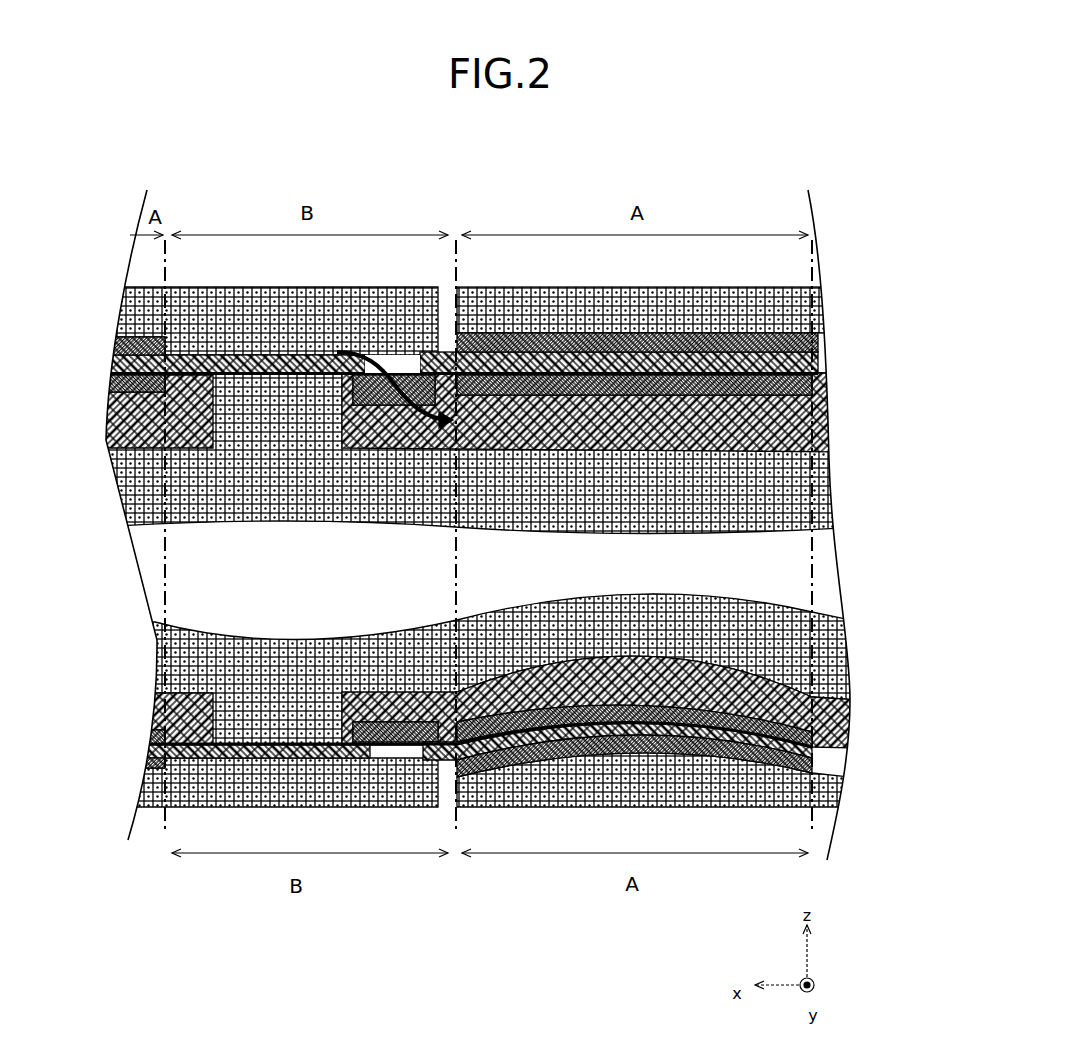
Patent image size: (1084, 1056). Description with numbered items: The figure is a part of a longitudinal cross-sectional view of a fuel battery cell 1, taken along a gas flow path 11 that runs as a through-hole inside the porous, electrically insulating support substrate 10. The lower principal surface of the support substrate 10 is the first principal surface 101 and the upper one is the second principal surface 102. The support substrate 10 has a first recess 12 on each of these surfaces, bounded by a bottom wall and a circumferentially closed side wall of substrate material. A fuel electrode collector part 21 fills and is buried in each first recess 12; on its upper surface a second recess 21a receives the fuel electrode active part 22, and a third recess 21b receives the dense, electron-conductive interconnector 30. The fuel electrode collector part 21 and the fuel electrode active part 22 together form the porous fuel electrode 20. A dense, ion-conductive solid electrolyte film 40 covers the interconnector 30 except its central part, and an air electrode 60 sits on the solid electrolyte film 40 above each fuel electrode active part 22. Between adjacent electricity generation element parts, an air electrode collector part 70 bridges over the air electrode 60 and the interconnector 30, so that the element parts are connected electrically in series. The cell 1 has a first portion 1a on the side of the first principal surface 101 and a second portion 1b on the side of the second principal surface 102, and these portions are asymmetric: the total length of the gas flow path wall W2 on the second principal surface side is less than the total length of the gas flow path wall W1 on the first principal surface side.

The fuel battery cell 1 is at (227, 173).
The first portion 1a is at (117, 620).
The second portion 1b is at (110, 287).
The support substrate 10 is at (803, 511).
The gas flow path 11 is at (826, 556).
The first recess 12 is at (803, 428).
The fuel electrode 20 is at (532, 505).
The fuel electrode collector part 21 is at (500, 498).
The second recess 21a is at (640, 385).
The third recess 21b is at (413, 352).
The fuel electrode active part 22 is at (818, 362).
The interconnector 30 is at (393, 352).
The solid electrolyte film 40 is at (600, 370).
The air electrode 60 is at (608, 343).
The air electrode collector part 70 is at (252, 302).
The first principal surface 101 is at (593, 922).
The second principal surface 102 is at (733, 190).
The gas flow path wall on the first principal surface side W1 is at (777, 612).
The gas flow path wall on the second principal surface side W2 is at (218, 527).